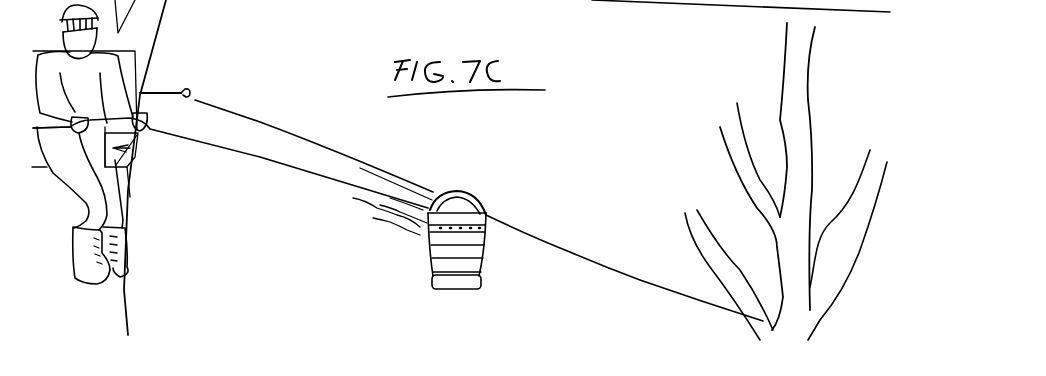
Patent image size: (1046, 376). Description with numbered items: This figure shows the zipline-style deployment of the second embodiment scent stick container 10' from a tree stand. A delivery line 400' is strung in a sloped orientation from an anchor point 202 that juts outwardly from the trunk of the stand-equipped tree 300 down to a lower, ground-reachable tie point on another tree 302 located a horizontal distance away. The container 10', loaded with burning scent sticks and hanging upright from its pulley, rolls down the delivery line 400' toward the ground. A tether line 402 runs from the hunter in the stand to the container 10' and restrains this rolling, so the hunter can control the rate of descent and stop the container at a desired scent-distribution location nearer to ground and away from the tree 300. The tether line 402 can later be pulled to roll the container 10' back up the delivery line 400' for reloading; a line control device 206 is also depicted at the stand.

The stand-equipped tree 300 is at (150, 23).
The anchor point 202 is at (154, 89).
The line control device 206 is at (142, 152).
The delivery line 400' is at (314, 142).
The tether line 402 is at (250, 163).
The container 10' is at (484, 240).
The tree 302 is at (790, 70).